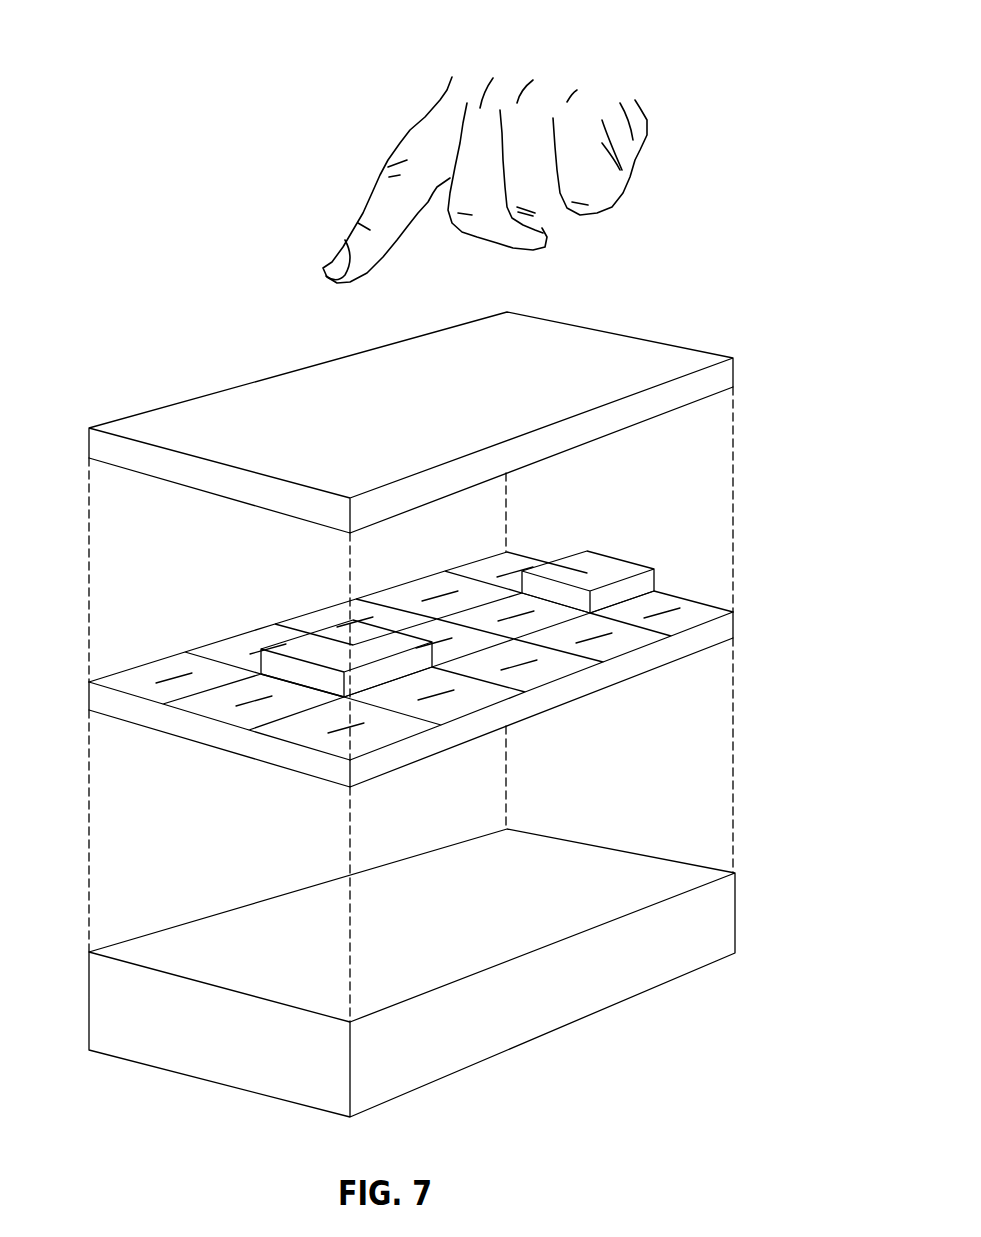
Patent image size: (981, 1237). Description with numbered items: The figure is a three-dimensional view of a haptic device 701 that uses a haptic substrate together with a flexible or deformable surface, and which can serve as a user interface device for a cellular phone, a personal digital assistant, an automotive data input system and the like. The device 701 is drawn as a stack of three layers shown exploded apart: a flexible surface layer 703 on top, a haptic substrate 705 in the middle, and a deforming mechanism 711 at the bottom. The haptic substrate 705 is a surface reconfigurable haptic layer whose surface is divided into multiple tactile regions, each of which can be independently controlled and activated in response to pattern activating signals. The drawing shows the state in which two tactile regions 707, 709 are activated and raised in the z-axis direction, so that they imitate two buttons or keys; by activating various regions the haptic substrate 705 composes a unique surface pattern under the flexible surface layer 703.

The haptic device 701 is at (160, 252).
The flexible surface layer 703 is at (87, 440).
The haptic substrate 705 is at (88, 694).
The tactile region 707 is at (313, 647).
The tactile region 709 is at (601, 556).
The deforming mechanism 711 is at (88, 982).